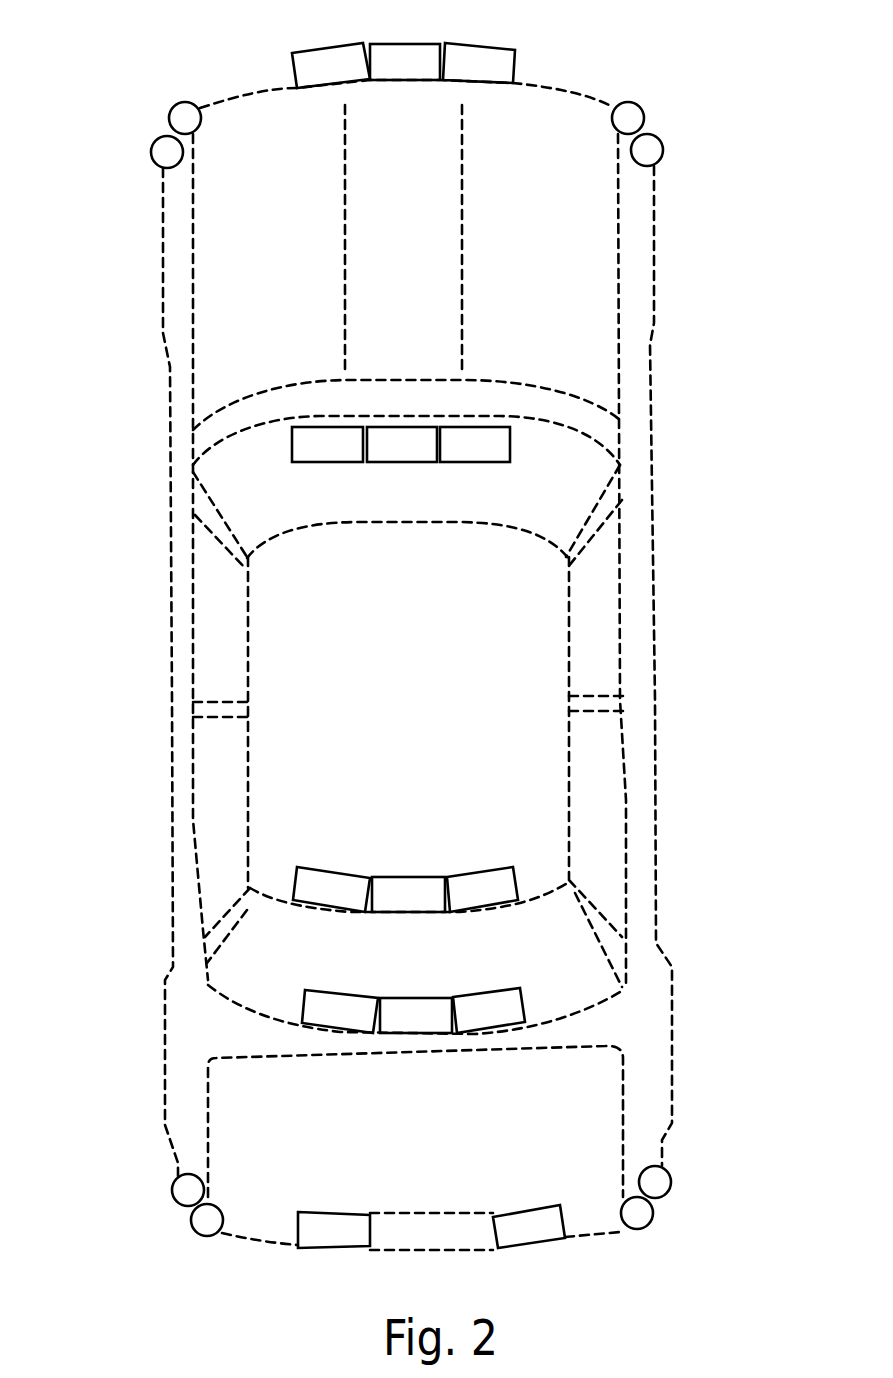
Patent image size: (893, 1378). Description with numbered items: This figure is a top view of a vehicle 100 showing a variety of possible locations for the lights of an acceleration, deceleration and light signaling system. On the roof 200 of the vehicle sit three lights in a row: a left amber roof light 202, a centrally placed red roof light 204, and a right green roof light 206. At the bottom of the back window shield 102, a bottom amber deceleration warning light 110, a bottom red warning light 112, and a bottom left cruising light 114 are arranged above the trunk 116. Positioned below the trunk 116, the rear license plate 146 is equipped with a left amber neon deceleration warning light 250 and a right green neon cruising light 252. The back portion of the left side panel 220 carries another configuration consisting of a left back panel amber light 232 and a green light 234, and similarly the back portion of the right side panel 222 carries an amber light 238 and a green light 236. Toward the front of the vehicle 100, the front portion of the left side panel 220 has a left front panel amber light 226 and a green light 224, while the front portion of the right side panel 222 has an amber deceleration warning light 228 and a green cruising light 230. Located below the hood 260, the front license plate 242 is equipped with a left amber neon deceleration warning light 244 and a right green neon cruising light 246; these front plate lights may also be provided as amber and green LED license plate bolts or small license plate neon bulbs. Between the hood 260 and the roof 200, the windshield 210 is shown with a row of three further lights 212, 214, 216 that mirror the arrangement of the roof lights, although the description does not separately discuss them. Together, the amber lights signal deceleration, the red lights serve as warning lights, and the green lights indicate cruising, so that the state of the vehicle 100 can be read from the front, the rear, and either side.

The vehicle 100 is at (635, 712).
The back window shield 102 is at (233, 983).
The bottom amber deceleration warning light 110 is at (322, 1012).
The bottom red warning light 112 is at (407, 1015).
The bottom left cruising light 114 is at (490, 1003).
The trunk 116 is at (240, 1090).
The license plate 146 is at (425, 1227).
The roof 200 is at (263, 773).
The left amber roof light 202 is at (320, 883).
The centrally placed red roof light 204 is at (402, 890).
The right green roof light 206 is at (482, 882).
The windshield 210 is at (260, 470).
The windshield sensor 212 is at (308, 433).
The windshield sensor 214 is at (410, 433).
The windshield sensor 216 is at (502, 433).
The left side panel 220 is at (185, 278).
The right side panel 222 is at (632, 297).
The green light 224 is at (168, 153).
The left front panel amber light 226 is at (170, 112).
The amber deceleration warning light 228 is at (640, 118).
The green cruising light 230 is at (655, 150).
The left back panel amber light 232 is at (177, 1190).
The green light 234 is at (207, 1228).
The green light 236 is at (630, 1218).
The amber light 238 is at (653, 1183).
The license plate 242 is at (403, 57).
The left amber neon deceleration warning light 244 is at (322, 65).
The right green neon cruising light 246 is at (483, 63).
The left amber neon deceleration warning light 250 is at (323, 1227).
The right green neon cruising light 252 is at (520, 1220).
The hood 260 is at (598, 387).